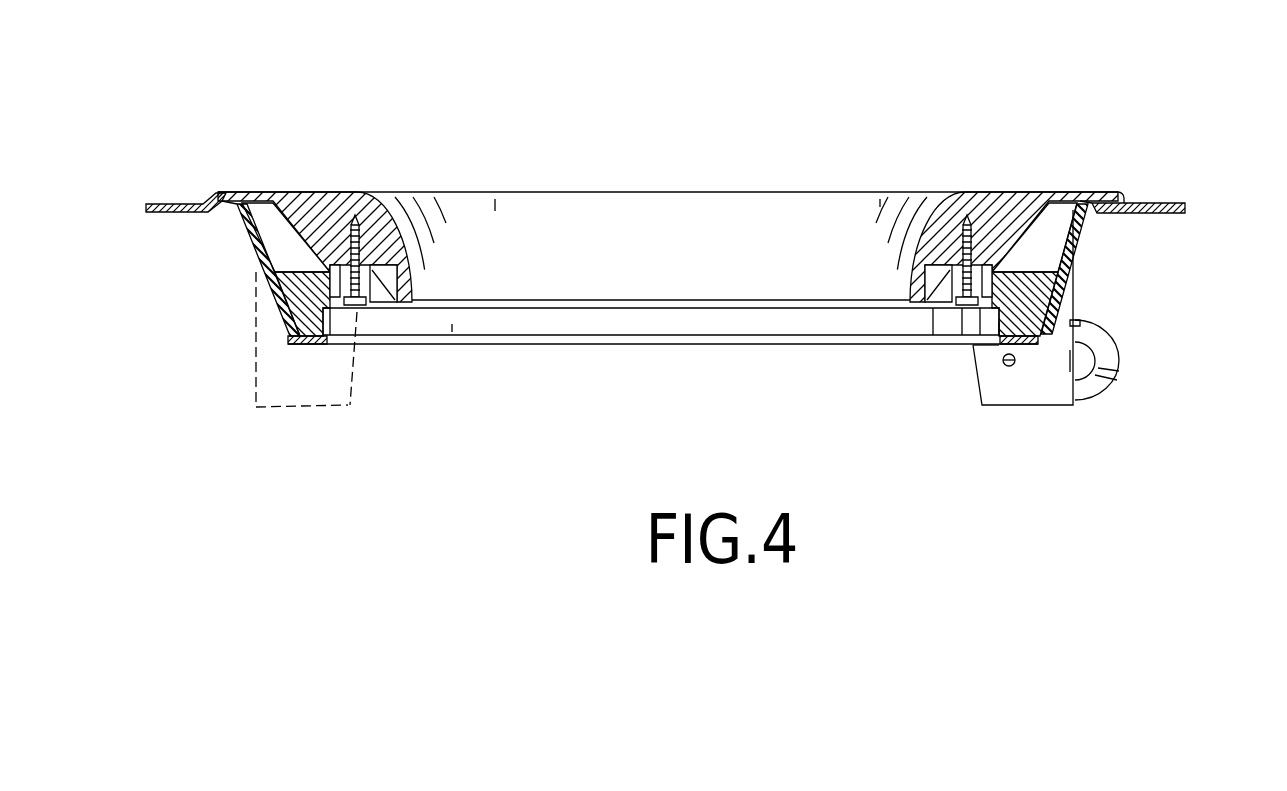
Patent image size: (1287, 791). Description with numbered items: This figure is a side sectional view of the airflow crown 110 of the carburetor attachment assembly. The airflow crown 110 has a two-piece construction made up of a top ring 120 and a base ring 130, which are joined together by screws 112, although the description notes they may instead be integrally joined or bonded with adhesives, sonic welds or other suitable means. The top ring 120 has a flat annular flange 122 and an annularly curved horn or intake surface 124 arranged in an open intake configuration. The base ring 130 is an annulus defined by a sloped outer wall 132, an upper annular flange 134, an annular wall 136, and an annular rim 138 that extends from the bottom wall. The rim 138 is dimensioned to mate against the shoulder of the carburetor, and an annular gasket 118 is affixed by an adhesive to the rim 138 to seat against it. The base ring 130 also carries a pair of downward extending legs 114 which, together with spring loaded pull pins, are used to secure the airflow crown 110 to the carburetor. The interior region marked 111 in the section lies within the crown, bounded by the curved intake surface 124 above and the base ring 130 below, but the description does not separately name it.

The airflow crown 110 is at (1071, 133).
The light chamber 111 is at (556, 259).
The screws 112 is at (346, 236).
The downward extending legs 114 is at (1070, 398).
The annular gasket 118 is at (1003, 353).
The top ring 120 is at (260, 171).
The flat annular flange 122 is at (180, 202).
The intake surface 124 is at (400, 222).
The base ring 130 is at (280, 312).
The sloped outer wall 132 is at (255, 253).
The upper annular flange 134 is at (1112, 213).
The annular wall 136 is at (973, 322).
The annular rim 138 is at (1075, 322).